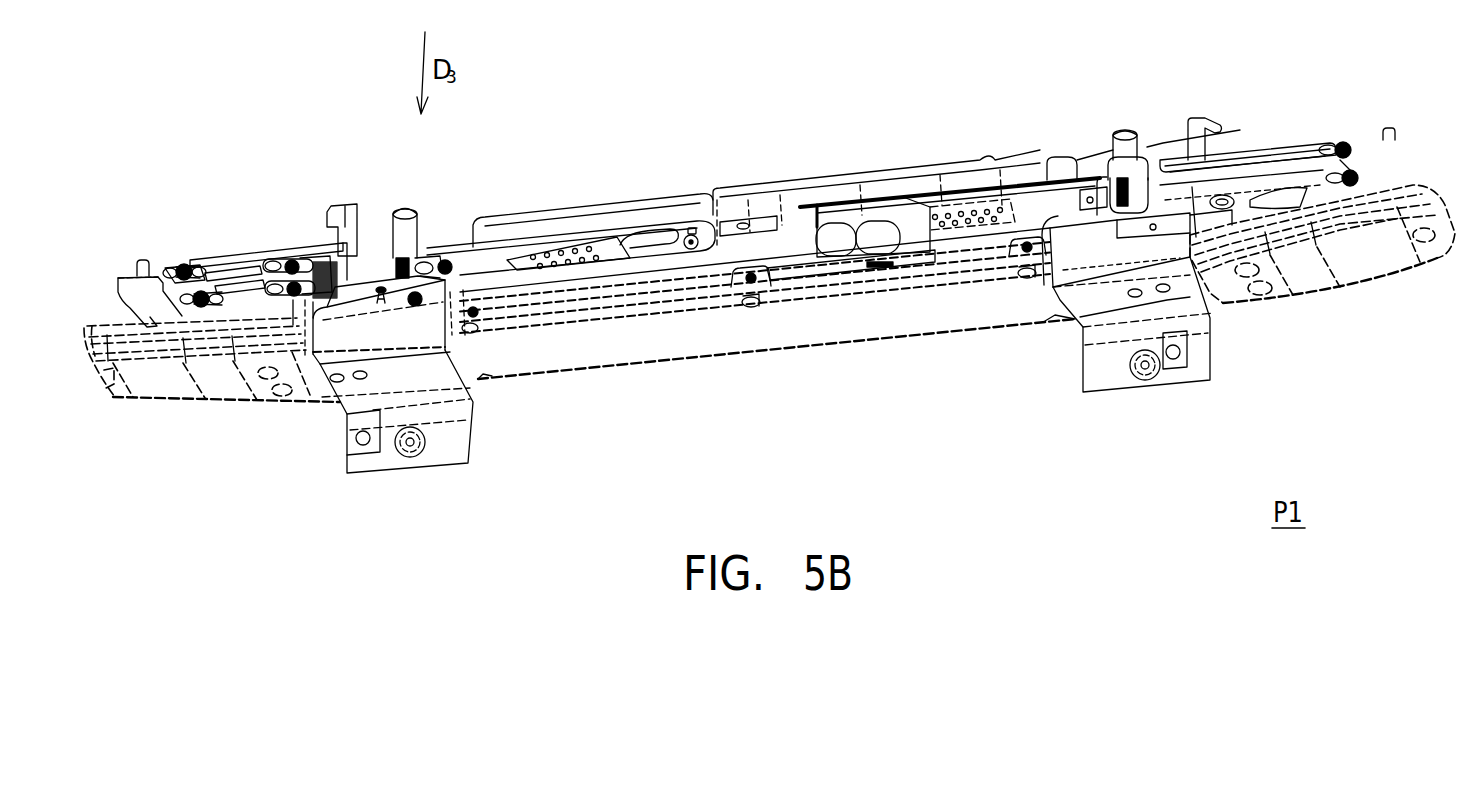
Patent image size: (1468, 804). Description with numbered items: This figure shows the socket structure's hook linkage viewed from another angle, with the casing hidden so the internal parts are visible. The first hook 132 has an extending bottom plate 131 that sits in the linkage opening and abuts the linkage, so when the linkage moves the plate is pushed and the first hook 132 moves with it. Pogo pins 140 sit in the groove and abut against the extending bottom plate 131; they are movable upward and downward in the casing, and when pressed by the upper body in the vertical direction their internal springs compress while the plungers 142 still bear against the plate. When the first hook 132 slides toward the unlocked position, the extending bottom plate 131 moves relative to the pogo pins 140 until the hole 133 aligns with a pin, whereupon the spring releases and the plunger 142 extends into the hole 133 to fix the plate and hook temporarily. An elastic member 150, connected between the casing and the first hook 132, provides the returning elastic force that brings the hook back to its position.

The extending bottom plate 131 is at (382, 303).
The first hook 132 is at (346, 208).
The hole 133 is at (400, 289).
The pogo pin 140 is at (403, 208).
The plunger 142 is at (414, 250).
The elastic member 150 is at (183, 263).